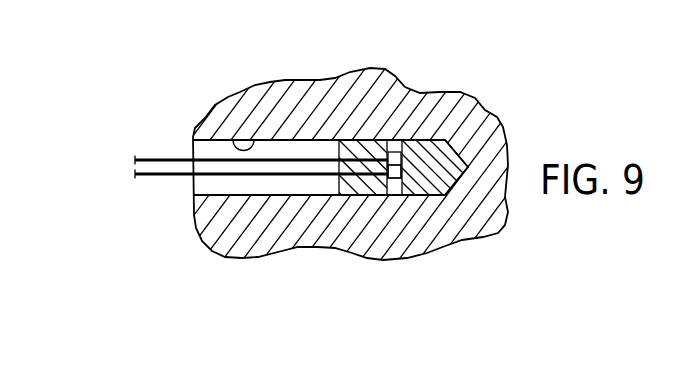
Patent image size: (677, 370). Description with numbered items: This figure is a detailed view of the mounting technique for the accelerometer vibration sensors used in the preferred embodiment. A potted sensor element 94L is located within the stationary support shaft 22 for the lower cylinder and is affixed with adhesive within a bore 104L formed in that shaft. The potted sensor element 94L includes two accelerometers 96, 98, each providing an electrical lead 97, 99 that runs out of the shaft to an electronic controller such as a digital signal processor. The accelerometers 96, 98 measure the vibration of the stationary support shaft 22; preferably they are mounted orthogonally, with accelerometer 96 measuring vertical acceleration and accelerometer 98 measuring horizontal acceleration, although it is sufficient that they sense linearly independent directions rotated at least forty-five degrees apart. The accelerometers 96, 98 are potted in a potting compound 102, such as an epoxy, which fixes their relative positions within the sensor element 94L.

The stationary support shaft 22 is at (485, 117).
The potted sensor element 94L is at (420, 188).
The accelerometer 96 is at (393, 152).
The electrical lead 97 is at (153, 159).
The accelerometer 98 is at (391, 178).
The electrical lead 99 is at (160, 176).
The potting compound 102 is at (360, 142).
The bore 104L is at (242, 140).